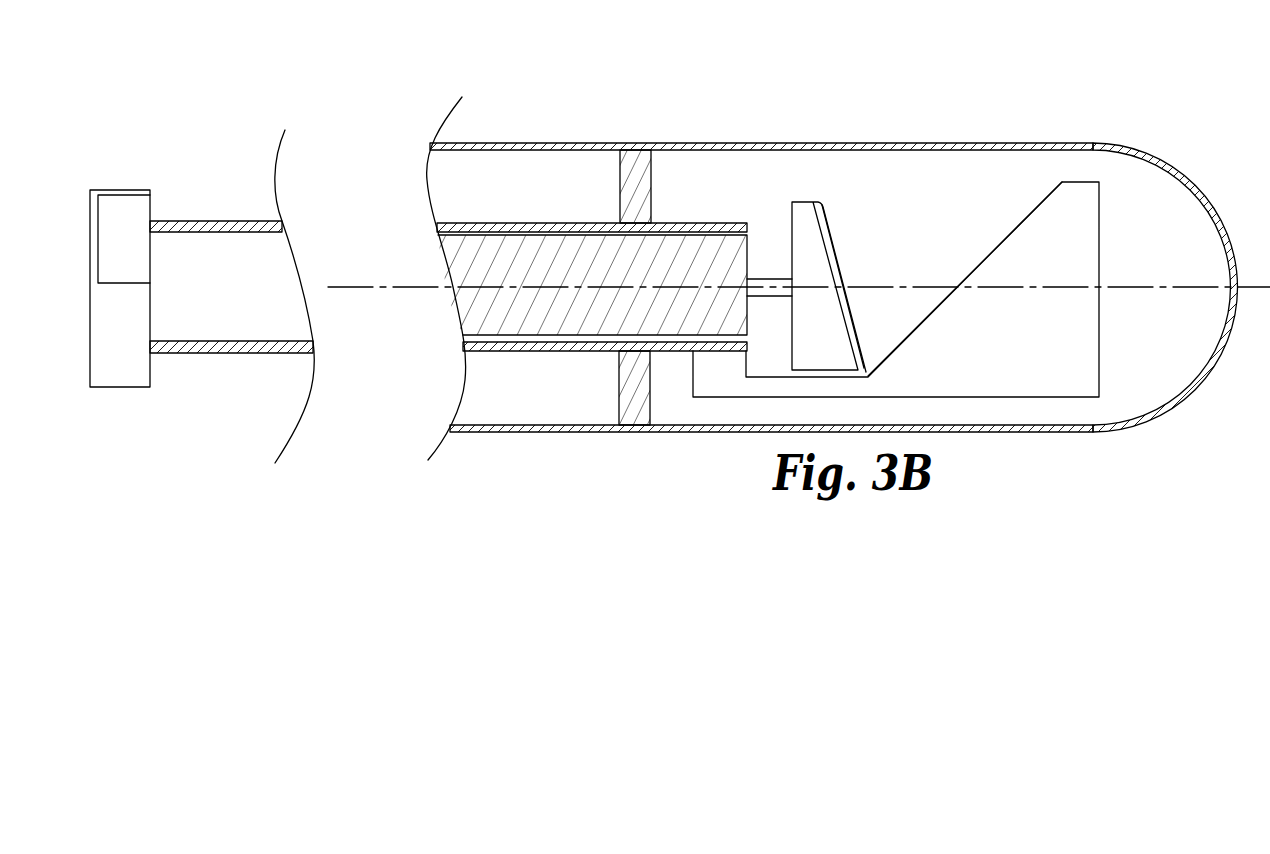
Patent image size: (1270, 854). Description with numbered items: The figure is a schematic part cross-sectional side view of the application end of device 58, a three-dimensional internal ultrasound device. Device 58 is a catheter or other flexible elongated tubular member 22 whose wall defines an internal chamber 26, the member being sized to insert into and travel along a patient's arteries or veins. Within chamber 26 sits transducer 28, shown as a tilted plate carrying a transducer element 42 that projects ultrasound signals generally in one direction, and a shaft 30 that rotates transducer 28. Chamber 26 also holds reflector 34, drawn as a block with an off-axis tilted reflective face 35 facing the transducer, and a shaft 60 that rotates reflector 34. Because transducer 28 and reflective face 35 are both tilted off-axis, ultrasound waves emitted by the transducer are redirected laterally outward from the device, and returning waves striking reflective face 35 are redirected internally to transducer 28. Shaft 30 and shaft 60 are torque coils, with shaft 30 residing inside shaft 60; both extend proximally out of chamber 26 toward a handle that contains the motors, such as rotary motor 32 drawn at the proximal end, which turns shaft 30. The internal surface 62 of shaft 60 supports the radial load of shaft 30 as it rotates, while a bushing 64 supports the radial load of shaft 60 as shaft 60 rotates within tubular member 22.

The tubular member 22 is at (507, 143).
The internal chamber 26 is at (965, 195).
The transducer 28 is at (842, 258).
The shaft 30 is at (673, 245).
The rotary motor 32 is at (123, 205).
The reflector 34 is at (1030, 357).
The reflective face 35 is at (1045, 197).
The transducer element 42 is at (827, 227).
The device 58 is at (742, 105).
The shaft 60 is at (208, 350).
The internal surface 62 is at (640, 337).
The bushing 64 is at (620, 183).